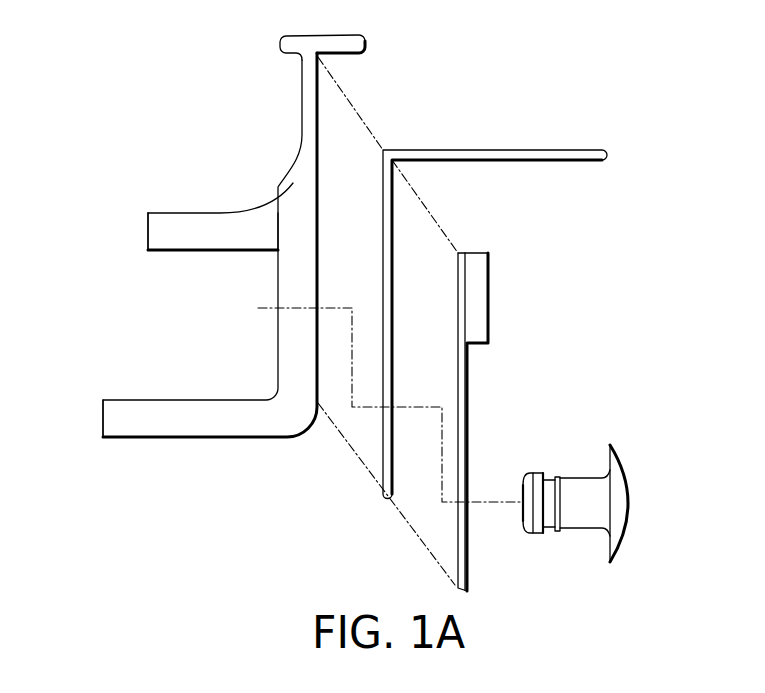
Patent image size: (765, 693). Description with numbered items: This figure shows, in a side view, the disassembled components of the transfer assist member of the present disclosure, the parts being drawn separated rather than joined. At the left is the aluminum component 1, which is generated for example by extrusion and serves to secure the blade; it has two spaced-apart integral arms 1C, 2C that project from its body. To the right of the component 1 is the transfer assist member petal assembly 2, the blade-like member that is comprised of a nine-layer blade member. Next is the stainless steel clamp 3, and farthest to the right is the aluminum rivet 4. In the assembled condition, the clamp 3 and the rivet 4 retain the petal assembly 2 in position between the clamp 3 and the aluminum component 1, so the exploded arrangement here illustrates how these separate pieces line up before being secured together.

The aluminum component 1 is at (292, 187).
The integral arm 1C is at (162, 233).
The integral arm 2C is at (110, 417).
The transfer assist member petal assembly 2 is at (542, 150).
The stainless steel clamp 3 is at (478, 310).
The aluminum rivet 4 is at (620, 515).